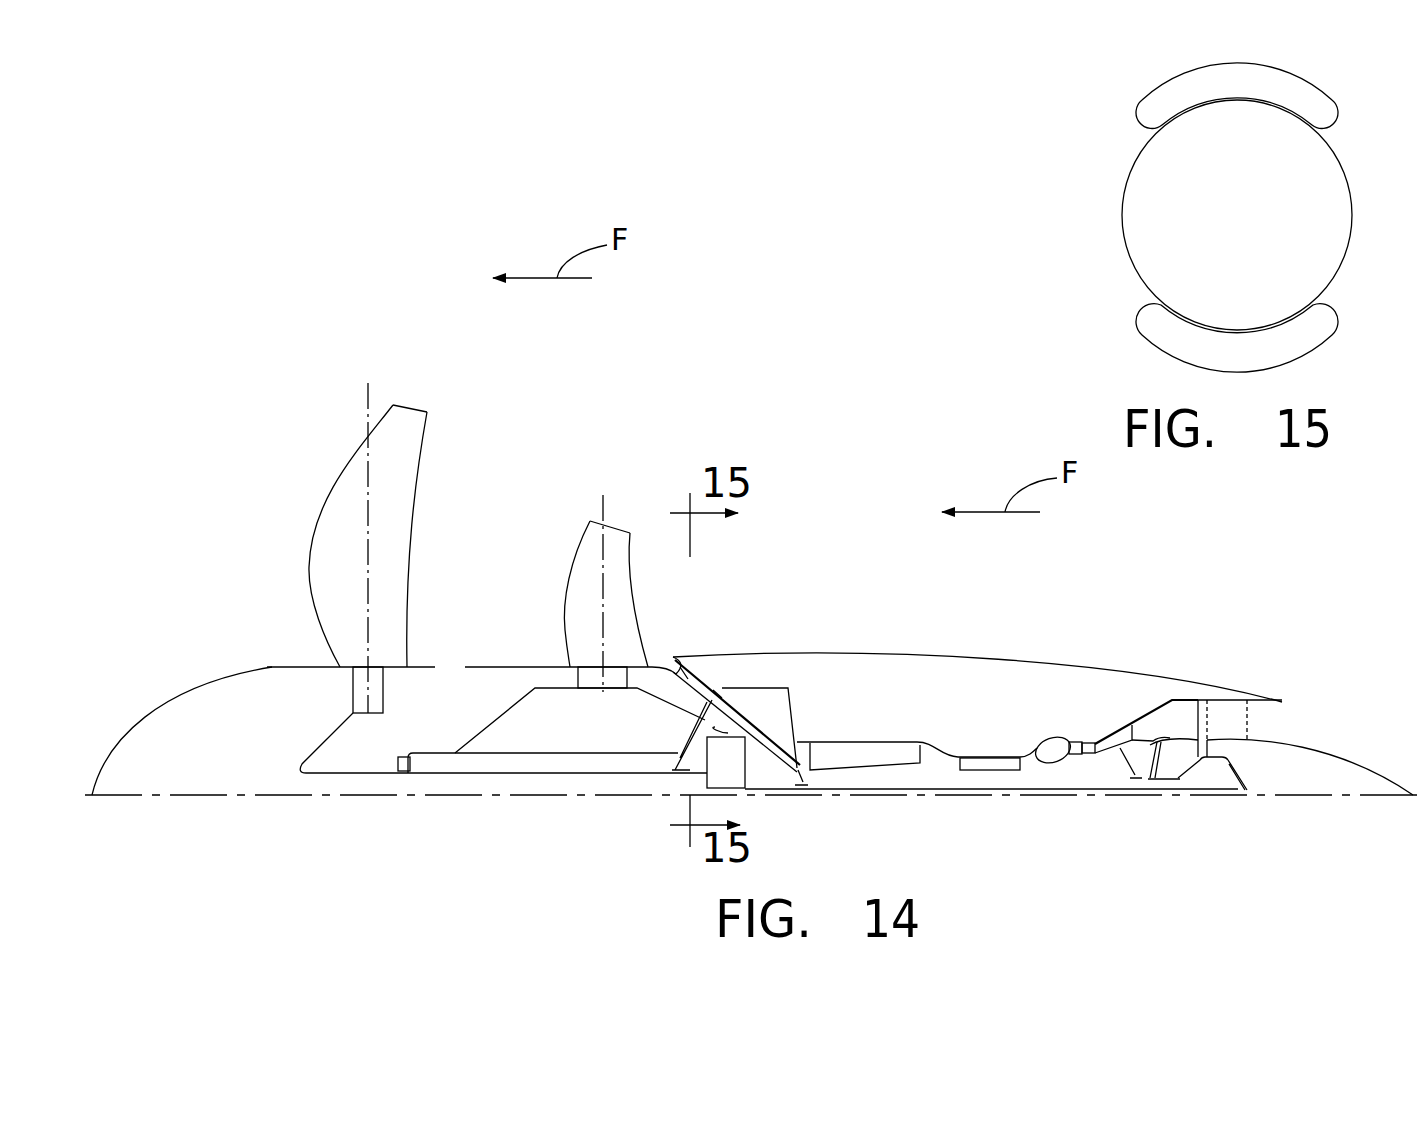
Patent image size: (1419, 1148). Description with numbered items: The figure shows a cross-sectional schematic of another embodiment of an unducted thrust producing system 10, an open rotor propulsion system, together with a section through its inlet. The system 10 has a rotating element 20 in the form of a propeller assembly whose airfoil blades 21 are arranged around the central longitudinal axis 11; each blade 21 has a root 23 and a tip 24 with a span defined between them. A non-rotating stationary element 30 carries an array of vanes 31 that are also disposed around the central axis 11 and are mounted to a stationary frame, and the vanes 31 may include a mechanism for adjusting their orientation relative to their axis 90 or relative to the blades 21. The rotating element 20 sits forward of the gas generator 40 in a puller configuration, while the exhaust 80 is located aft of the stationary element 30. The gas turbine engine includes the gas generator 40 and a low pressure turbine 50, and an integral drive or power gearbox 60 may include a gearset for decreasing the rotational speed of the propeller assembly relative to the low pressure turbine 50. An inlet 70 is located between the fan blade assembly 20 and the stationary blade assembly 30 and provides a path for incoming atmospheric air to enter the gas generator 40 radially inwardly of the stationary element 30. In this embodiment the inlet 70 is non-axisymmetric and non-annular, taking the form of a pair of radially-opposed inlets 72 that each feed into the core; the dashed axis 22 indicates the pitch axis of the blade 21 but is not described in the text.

In FIG. 14, the unducted thrust producing system 10 is at (703, 383).
In FIG. 14, the central longitudinal axis 11 is at (551, 797).
In FIG. 14, the rotating element 20 is at (247, 563).
In FIG. 14, the airfoil blade 21 is at (316, 523).
In FIG. 14, the blade pitch axis 22 is at (366, 402).
In FIG. 14, the root 23 is at (337, 664).
In FIG. 14, the tip 24 is at (418, 405).
In FIG. 14, the stationary element 30 is at (911, 457).
In FIG. 14, the vane 31 is at (628, 573).
In FIG. 14, the gas generator 40 is at (955, 700).
In FIG. 14, the low pressure turbine 50 is at (1171, 703).
In FIG. 14, the power gearbox 60 is at (737, 792).
In FIG. 14, the inlet 70 is at (670, 649).
In FIG. 15, the radially-opposed inlets 72 is at (1155, 107).
In FIG. 14, the exhaust 80 is at (1293, 722).
In FIG. 14, the vane axis 90 is at (602, 508).